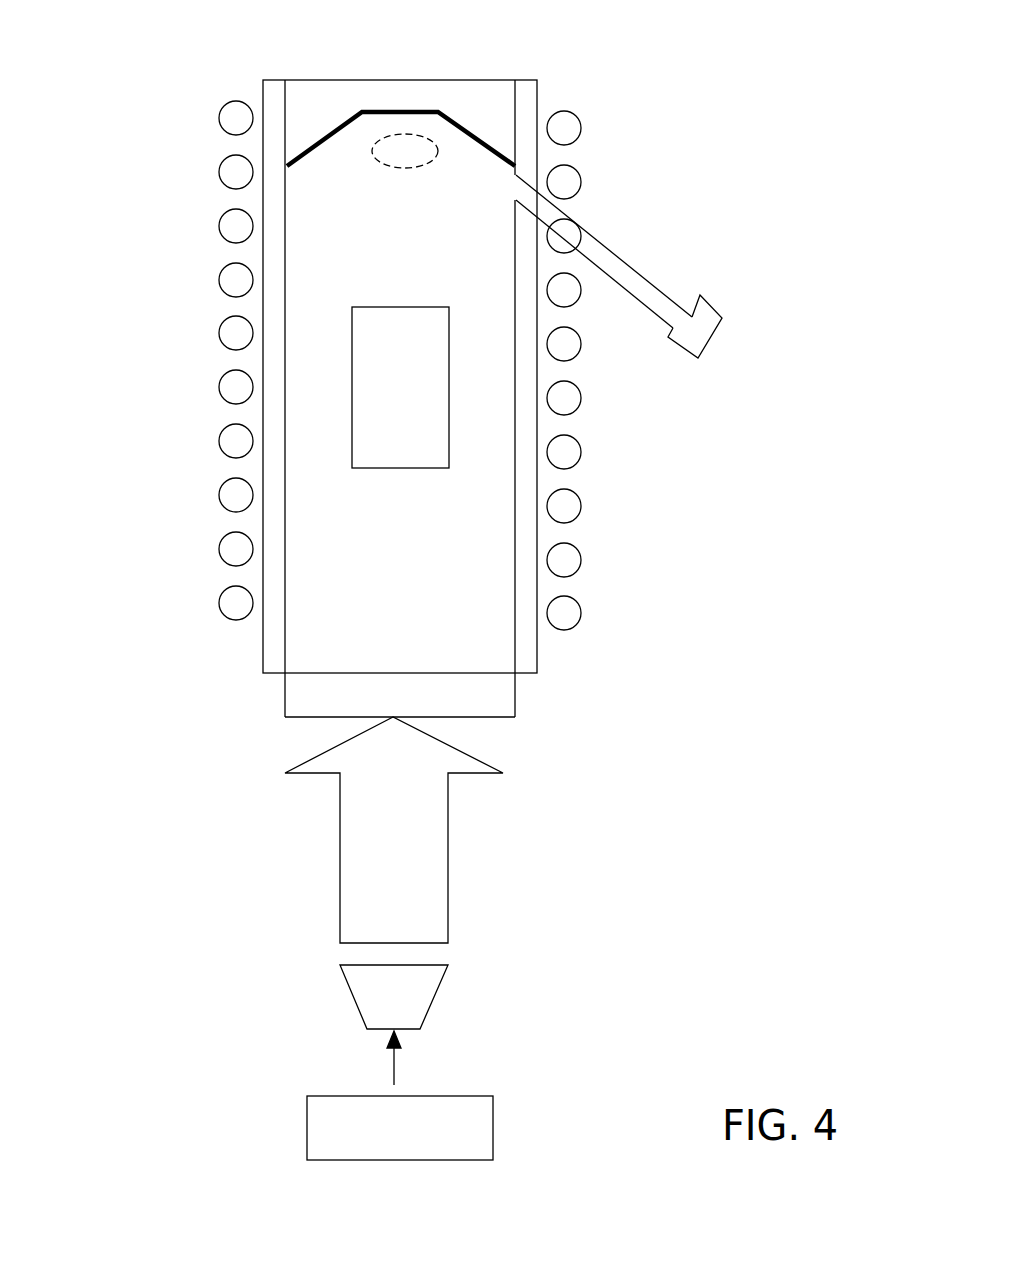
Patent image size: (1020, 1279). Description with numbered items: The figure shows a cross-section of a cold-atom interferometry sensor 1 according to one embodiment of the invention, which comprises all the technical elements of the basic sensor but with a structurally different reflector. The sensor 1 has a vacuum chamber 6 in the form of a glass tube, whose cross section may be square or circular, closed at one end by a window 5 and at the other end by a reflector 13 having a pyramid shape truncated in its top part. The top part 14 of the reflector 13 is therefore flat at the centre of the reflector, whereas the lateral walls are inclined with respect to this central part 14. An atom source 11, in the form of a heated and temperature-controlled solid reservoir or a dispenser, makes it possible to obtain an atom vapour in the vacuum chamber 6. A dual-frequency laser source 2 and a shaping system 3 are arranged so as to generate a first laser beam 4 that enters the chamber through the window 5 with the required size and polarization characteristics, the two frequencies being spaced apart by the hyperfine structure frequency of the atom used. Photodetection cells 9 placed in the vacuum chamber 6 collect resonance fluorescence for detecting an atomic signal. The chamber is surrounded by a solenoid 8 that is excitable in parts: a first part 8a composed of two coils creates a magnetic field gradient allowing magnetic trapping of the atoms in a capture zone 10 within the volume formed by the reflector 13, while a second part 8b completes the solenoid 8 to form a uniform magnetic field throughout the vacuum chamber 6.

The interferometry sensor 1 is at (136, 950).
The dual-frequency laser source 2 is at (480, 1117).
The shaping system 3 is at (425, 998).
The first laser beam 4 is at (453, 850).
The window 5 is at (297, 695).
The vacuum chamber 6 is at (525, 608).
The solenoid 8 is at (568, 347).
The first part of the solenoid 8a is at (232, 133).
The second part of the solenoid 8b is at (230, 555).
The photodetection cells 9 is at (384, 350).
The capture zone 10 is at (418, 145).
The atom source 11 is at (713, 325).
The reflector 13 is at (298, 123).
The top part of the reflector 14 is at (383, 110).